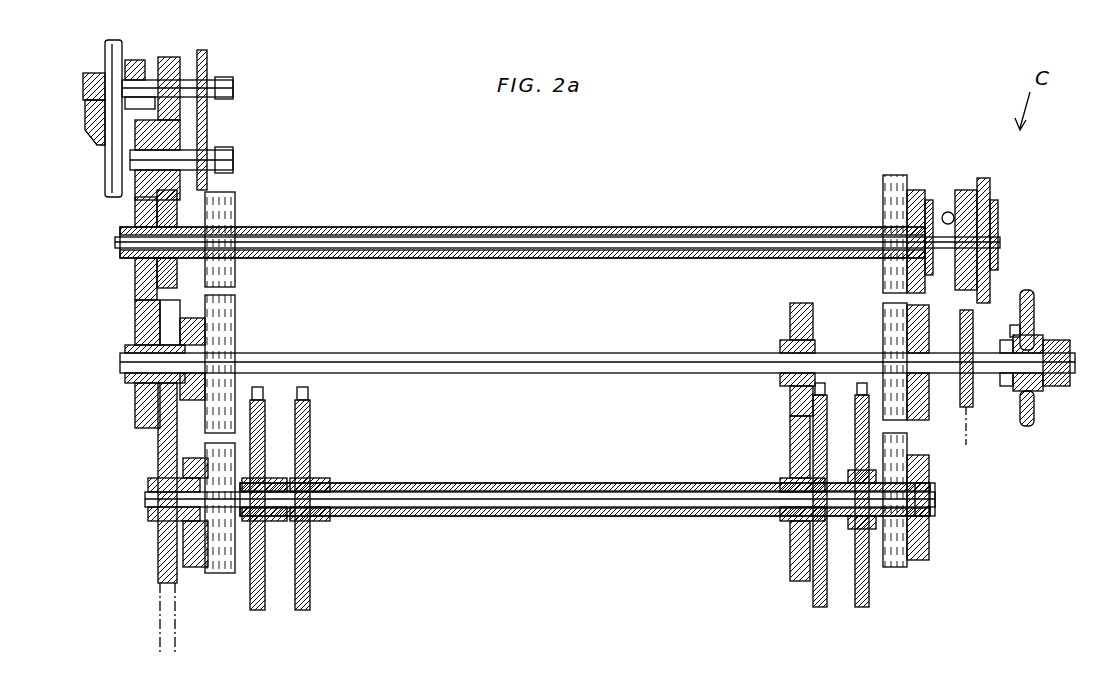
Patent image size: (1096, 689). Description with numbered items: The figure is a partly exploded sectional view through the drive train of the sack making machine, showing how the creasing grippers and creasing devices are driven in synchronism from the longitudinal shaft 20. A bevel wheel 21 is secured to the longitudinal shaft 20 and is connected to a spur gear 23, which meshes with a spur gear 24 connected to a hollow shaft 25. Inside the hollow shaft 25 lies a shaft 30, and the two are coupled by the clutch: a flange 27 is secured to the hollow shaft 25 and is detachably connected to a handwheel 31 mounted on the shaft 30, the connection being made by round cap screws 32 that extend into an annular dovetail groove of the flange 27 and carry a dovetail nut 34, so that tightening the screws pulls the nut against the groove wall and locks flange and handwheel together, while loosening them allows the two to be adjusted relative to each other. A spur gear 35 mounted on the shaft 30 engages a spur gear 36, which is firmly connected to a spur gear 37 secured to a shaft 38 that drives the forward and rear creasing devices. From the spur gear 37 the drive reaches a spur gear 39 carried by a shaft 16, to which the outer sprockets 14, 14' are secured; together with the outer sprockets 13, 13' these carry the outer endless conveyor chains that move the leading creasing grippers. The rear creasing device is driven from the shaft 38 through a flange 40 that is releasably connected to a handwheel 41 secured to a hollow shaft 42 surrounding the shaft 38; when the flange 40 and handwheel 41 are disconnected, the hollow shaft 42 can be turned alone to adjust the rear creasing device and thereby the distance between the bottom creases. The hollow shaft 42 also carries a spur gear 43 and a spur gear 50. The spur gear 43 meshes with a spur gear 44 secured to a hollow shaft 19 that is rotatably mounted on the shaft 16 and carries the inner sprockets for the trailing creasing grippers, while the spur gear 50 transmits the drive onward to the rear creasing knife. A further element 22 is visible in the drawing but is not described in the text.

The outer sprocket 13 is at (310, 517).
The outer sprocket 13' is at (794, 504).
The outer sprocket 14 is at (261, 517).
The outer sprocket 14' is at (883, 495).
The shaft 16 is at (484, 515).
The hollow shaft 19 is at (603, 484).
The longitudinal shaft 20 is at (105, 50).
The bevel wheel 21 is at (92, 112).
The lower pin shaft 22 is at (140, 185).
The spur gear 23 is at (170, 122).
The spur gear 24 is at (140, 225).
The hollow shaft 25 is at (422, 228).
The flange 27 is at (958, 195).
The shaft 30 is at (538, 250).
The handwheel 31 is at (988, 186).
The round cap screw 32 is at (996, 208).
The dovetail nut 34 is at (955, 205).
The spur gear 35 is at (138, 276).
The spur gear 36 is at (138, 322).
The spur gear 37 is at (140, 400).
The shaft 38 is at (428, 353).
The spur gear 39 is at (158, 461).
The flange 40 is at (1060, 388).
The handwheel 41 is at (1030, 290).
The hollow shaft 42 is at (998, 387).
The spur gear 43 is at (790, 310).
The spur gear 44 is at (790, 545).
The spur gear 50 is at (957, 390).